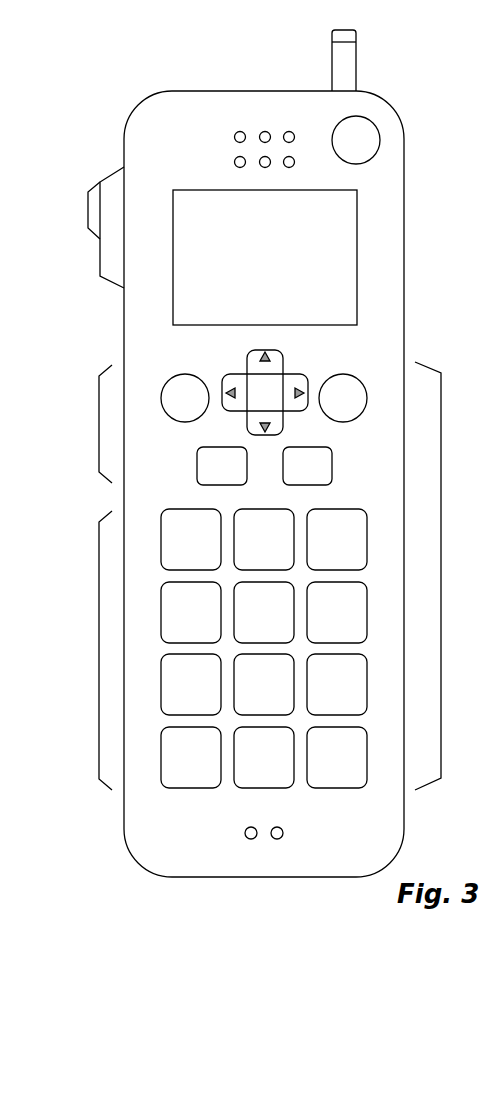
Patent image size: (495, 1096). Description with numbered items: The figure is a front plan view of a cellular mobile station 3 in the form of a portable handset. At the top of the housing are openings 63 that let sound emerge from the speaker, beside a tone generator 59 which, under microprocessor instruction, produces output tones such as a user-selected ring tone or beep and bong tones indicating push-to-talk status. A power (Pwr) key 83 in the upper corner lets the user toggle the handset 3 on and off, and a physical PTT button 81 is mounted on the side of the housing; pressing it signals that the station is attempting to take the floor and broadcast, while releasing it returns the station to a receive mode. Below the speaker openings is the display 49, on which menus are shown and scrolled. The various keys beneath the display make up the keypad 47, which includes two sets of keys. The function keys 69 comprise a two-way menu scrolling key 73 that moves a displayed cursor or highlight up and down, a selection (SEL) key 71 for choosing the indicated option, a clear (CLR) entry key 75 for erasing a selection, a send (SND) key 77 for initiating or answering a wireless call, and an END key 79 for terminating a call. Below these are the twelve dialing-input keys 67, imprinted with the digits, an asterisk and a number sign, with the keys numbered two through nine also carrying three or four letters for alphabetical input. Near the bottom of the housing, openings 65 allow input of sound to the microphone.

The mobile station 3 is at (122, 148).
The tone generator 59 is at (330, 86).
The openings 63 is at (238, 128).
The power key 83 is at (382, 128).
The PTT button 81 is at (86, 200).
The display 49 is at (359, 238).
The menu scrolling key 73 is at (310, 376).
The clear entry key 75 is at (161, 386).
The selection key 71 is at (368, 387).
The send key 77 is at (196, 471).
The END key 79 is at (334, 470).
The function keys 69 is at (99, 417).
The dialing-input keys 67 is at (99, 637).
The keypad 47 is at (441, 562).
The openings 65 is at (244, 841).